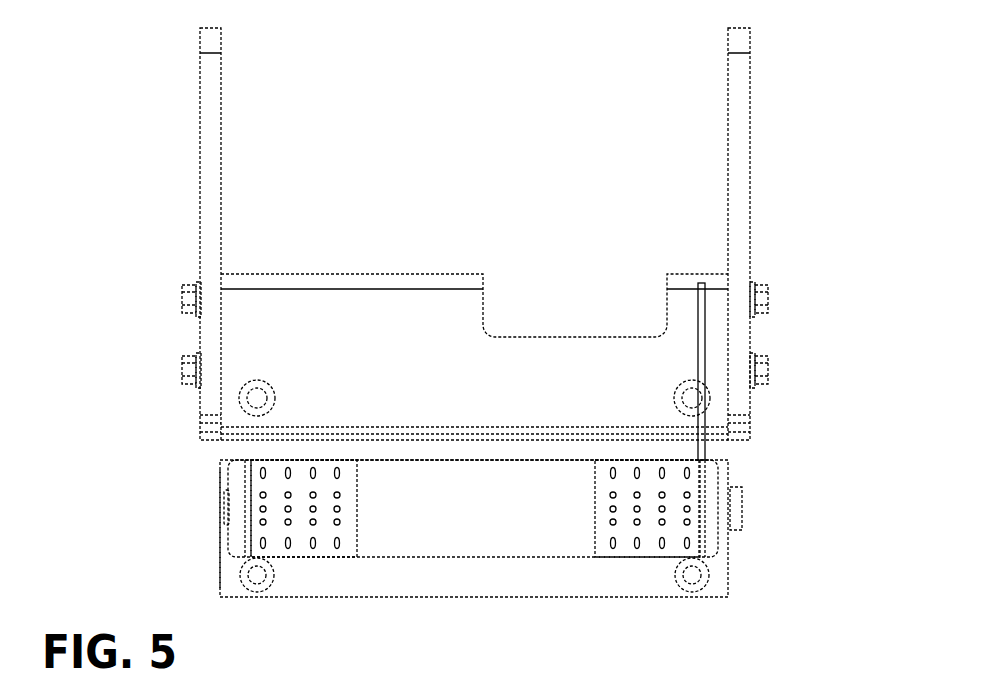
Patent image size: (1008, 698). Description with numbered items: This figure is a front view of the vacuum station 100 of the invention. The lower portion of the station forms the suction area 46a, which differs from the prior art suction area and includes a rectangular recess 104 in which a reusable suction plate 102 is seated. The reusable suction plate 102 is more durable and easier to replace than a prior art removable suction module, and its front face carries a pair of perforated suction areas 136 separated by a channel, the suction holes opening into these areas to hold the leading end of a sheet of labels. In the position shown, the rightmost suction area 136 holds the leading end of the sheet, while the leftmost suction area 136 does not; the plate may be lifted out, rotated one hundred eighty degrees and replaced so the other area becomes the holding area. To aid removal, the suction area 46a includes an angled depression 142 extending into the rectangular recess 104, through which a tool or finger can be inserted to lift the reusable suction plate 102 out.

The vacuum station 100 is at (803, 516).
The reusable suction plate 102 is at (448, 560).
The rectangular recess 104 is at (553, 558).
The suction area 136 is at (298, 556).
The angled depression 142 is at (227, 502).
The suction area 46a is at (212, 546).